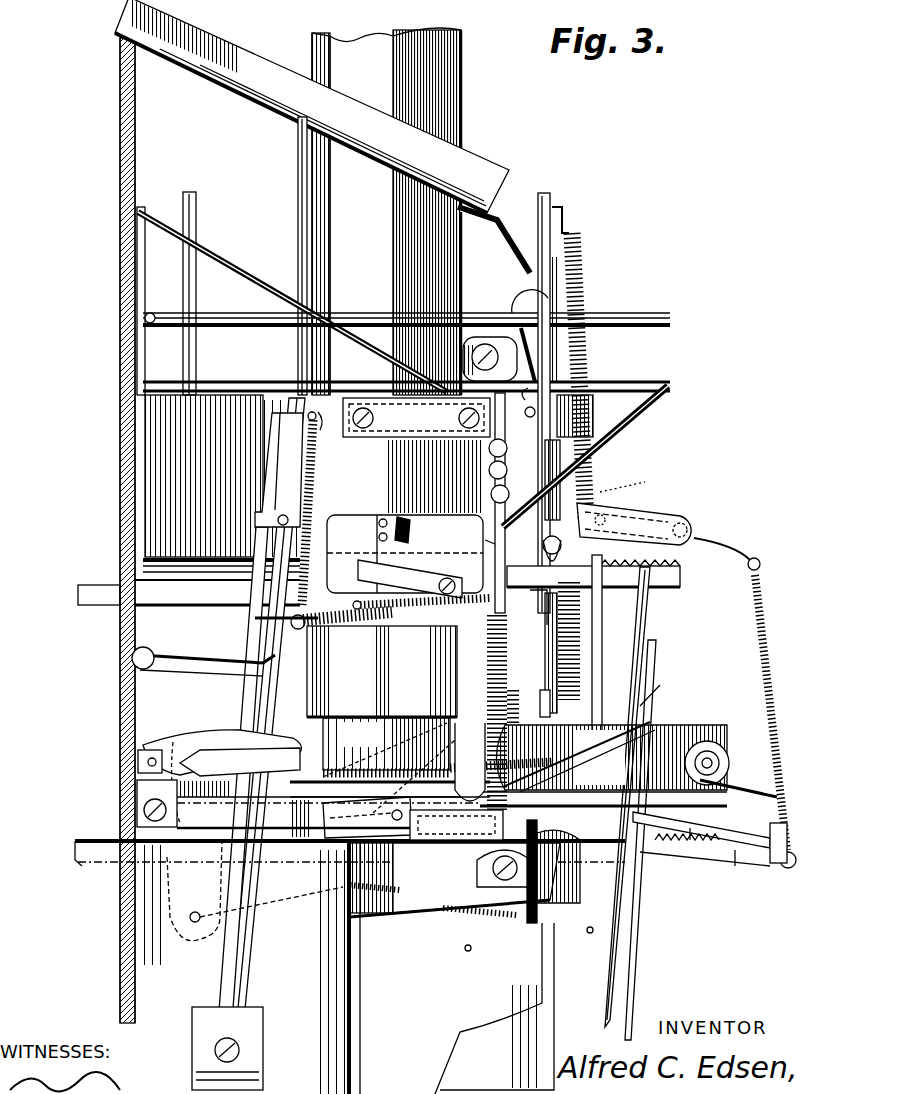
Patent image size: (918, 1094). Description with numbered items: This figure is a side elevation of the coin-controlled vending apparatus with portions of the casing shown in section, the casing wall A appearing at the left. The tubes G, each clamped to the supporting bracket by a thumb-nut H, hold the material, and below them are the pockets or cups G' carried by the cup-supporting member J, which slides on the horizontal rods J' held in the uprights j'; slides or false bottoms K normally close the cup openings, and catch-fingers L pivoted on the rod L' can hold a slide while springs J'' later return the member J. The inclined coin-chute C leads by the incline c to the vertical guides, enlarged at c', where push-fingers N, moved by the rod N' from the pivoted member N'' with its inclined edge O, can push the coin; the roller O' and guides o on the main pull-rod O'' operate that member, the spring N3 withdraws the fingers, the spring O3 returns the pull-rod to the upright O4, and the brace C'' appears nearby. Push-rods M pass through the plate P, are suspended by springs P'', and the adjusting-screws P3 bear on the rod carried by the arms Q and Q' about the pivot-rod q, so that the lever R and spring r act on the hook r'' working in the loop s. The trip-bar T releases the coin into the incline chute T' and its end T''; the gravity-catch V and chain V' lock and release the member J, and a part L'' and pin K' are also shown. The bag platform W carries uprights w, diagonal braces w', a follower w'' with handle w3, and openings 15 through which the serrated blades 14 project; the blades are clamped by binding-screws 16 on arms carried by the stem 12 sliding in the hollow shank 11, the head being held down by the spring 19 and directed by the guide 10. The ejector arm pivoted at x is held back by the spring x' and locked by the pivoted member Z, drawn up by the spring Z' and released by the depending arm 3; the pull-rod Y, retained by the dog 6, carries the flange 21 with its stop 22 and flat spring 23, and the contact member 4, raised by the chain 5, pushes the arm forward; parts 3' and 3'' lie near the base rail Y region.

The post A is at (121, 148).
The inclined coin-chute C is at (293, 106).
The brace C'' is at (587, 456).
The tube or receptacle G is at (407, 211).
The pocket or cup G' is at (386, 744).
The upright or guide w is at (439, 537).
The diagonal brace w' is at (292, 302).
The follower w'' is at (425, 314).
The stem or handle w3 is at (298, 210).
The platform W is at (266, 381).
The incline c is at (494, 241).
The enlarged upper end of vertical chute c' is at (570, 225).
The push-finger N is at (505, 332).
The rod N' is at (572, 557).
The pivoted member N'' is at (510, 866).
The spring N3 is at (582, 643).
The plate P is at (624, 430).
The suspending-spring P'' is at (601, 376).
The adjusting-screw P3 is at (590, 472).
The thumb-nut H is at (508, 503).
The arm Q is at (634, 512).
The arm Q' is at (697, 523).
The pivot-rod q is at (614, 517).
The lever R is at (737, 552).
The spring r is at (765, 721).
The hook r'' is at (769, 829).
The dog 6 is at (542, 547).
The inclined edge O is at (502, 871).
The roller O' is at (585, 742).
The main pull-rod O'' is at (455, 880).
The spring O3 is at (457, 936).
The upright O4 is at (550, 963).
The guide o is at (578, 939).
The trip-bar T is at (641, 797).
The incline chute T' is at (530, 607).
The end of incline chute T'' is at (534, 653).
The push-rod M is at (600, 614).
The catch-finger L is at (657, 701).
The rod L' is at (613, 765).
The toothed bar L'' is at (701, 799).
The cup-supporting member J is at (379, 762).
The horizontal rod J' is at (708, 823).
The spring J'' is at (615, 749).
The upright j' is at (644, 840).
The slide or false bottom K is at (725, 763).
The pin K' is at (482, 545).
The elongated loop portion s is at (685, 823).
The gravity-catch V is at (220, 768).
The chain or flexible connection V' is at (255, 890).
The pull-lever or pull-rod Y is at (185, 606).
The pivoted member Z is at (218, 794).
The spring Z' is at (533, 703).
The pivot x is at (255, 852).
The spring x' is at (396, 657).
The depending arm 3 is at (427, 726).
The bar 3' is at (333, 817).
The base rail 3'' is at (350, 838).
The pivoted contact member 4 is at (416, 578).
The chain 5 is at (408, 752).
The guide 10 is at (220, 668).
The hollow shank 11 is at (272, 570).
The stem 12 is at (280, 528).
The serrated contact-blade 14 is at (286, 425).
The opening 15 is at (283, 463).
The binding-screw 16 is at (328, 435).
The spring 19 is at (319, 478).
The flange 21 is at (358, 518).
The stop 22 is at (414, 528).
The flat spring 23 is at (375, 553).